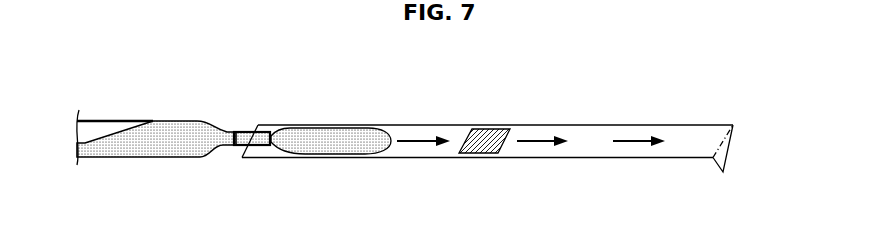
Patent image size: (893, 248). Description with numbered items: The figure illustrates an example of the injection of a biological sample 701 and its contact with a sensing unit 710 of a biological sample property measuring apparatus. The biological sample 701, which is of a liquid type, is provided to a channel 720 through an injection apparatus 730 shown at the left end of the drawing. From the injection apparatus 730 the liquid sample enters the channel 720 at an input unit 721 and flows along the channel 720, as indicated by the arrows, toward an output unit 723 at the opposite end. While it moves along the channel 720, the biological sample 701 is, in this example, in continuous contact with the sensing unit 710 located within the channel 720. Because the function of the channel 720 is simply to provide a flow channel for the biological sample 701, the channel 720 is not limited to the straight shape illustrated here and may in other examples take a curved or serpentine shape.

The injection apparatus 730 is at (140, 121).
The input unit 721 is at (264, 132).
The channel 720 is at (555, 125).
The output unit 723 is at (731, 140).
The biological sample 701 is at (333, 148).
The sensing unit 710 is at (488, 150).